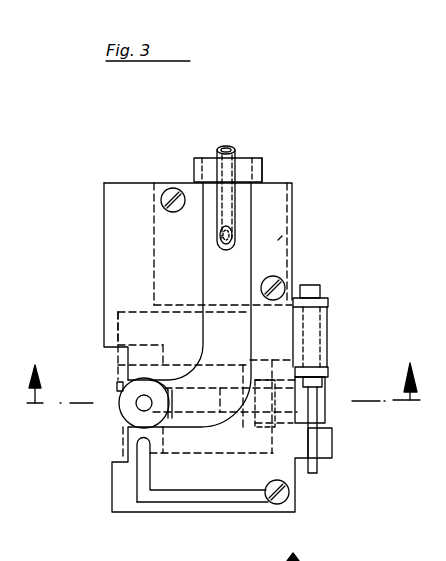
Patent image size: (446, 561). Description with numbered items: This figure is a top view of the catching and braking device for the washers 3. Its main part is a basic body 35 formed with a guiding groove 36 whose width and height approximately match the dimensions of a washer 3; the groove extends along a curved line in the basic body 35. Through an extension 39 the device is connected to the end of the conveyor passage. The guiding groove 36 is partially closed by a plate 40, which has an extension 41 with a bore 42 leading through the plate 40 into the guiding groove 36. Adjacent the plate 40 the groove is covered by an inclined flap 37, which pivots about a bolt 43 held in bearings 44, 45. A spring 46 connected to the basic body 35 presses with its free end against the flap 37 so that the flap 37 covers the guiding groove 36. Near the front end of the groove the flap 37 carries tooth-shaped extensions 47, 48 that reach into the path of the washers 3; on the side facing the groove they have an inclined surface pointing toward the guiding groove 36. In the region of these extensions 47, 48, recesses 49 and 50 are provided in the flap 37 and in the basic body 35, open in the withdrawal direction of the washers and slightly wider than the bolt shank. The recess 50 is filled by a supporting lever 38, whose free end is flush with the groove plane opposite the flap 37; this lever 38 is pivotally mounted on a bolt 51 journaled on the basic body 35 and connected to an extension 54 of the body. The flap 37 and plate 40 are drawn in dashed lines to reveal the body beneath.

The washer 3 is at (152, 382).
The basic body 35 is at (118, 226).
The guiding groove 36 is at (240, 157).
The flap 37 is at (118, 323).
The supporting lever 38 is at (117, 405).
The extension 39 is at (262, 167).
The plate 40 is at (280, 238).
The extension 41 is at (216, 170).
The bore 42 is at (226, 146).
The bolt 43 is at (326, 380).
The bearing 44 is at (328, 303).
The bearing 45 is at (328, 371).
The spring 46 is at (201, 493).
The tooth-shaped extension 47 is at (118, 386).
The tooth-shaped extension 48 is at (127, 423).
The recess 49 is at (252, 386).
The recess 50 is at (120, 415).
The bolt 51 is at (318, 468).
The extension 54 is at (332, 442).